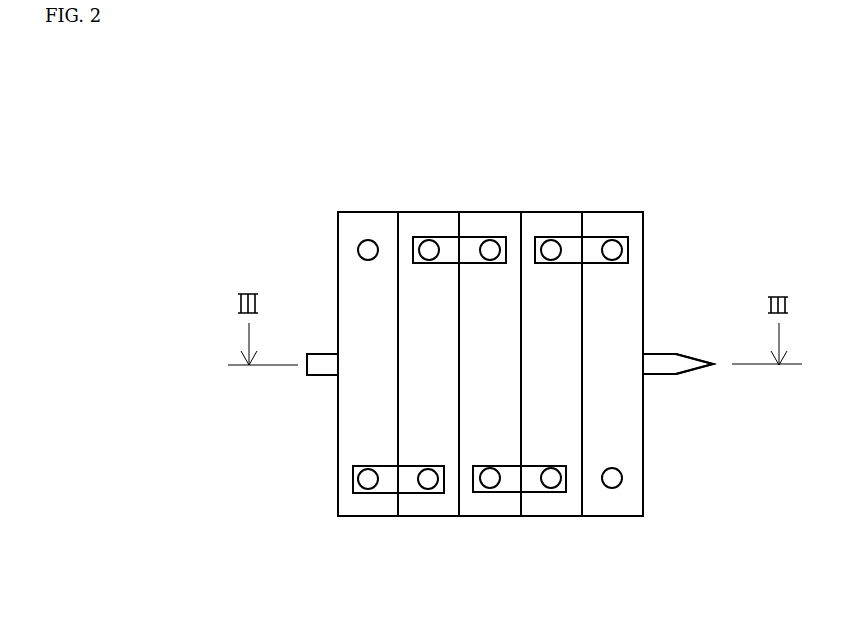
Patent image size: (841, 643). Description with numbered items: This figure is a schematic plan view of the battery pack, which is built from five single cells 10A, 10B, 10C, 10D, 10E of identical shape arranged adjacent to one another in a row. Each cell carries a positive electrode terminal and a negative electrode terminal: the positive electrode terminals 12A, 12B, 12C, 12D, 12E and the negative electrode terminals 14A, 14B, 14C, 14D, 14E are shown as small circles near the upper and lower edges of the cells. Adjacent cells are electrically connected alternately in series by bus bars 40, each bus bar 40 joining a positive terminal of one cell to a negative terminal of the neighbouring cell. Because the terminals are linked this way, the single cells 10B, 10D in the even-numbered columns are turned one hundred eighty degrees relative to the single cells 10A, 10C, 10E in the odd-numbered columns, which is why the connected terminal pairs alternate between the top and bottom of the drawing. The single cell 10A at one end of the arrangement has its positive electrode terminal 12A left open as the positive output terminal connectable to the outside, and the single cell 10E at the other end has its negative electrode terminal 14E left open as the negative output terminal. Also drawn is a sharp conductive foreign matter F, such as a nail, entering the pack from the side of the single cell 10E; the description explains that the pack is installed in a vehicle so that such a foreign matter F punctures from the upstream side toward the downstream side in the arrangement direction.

The single cell 10A is at (358, 518).
The single cell 10B is at (436, 518).
The single cell 10C is at (497, 518).
The single cell 10D is at (549, 518).
The single cell 10E is at (612, 518).
The positive electrode terminal 12A is at (368, 240).
The positive electrode terminal 12B is at (428, 489).
The positive electrode terminal 12C is at (490, 240).
The positive electrode terminal 12D is at (551, 488).
The positive electrode terminal 12E is at (612, 240).
The negative electrode terminal 14A is at (366, 489).
The negative electrode terminal 14B is at (429, 240).
The negative electrode terminal 14C is at (490, 488).
The negative electrode terminal 14D is at (551, 240).
The negative electrode terminal 14E is at (612, 488).
The bus bar 40 is at (450, 240).
The conductive foreign matter F is at (658, 353).